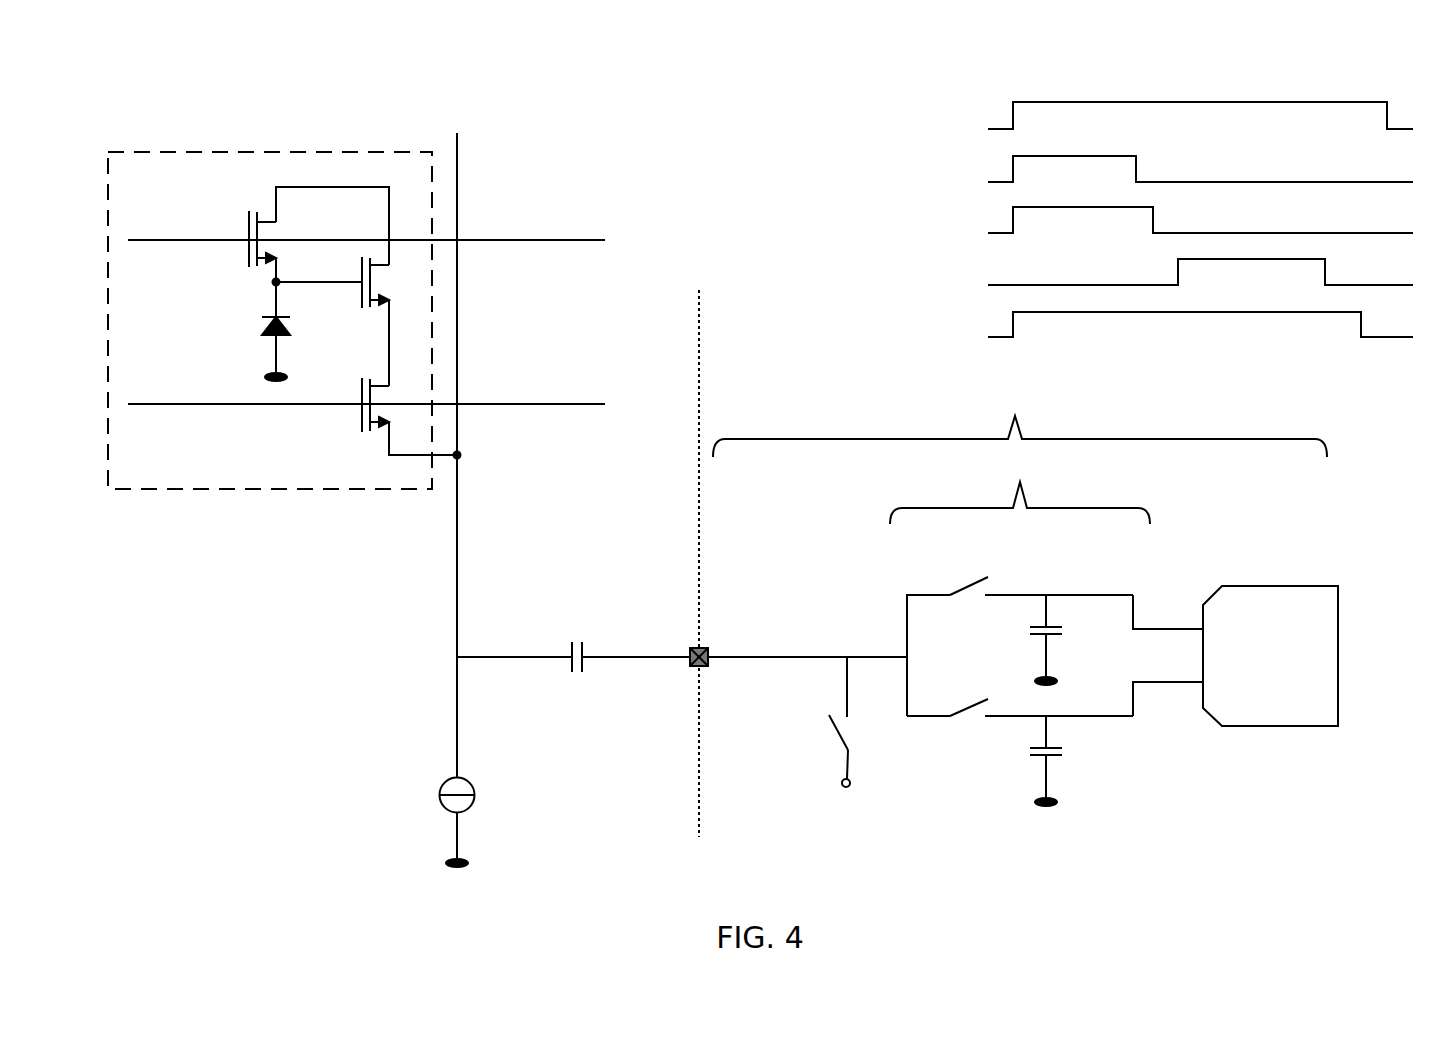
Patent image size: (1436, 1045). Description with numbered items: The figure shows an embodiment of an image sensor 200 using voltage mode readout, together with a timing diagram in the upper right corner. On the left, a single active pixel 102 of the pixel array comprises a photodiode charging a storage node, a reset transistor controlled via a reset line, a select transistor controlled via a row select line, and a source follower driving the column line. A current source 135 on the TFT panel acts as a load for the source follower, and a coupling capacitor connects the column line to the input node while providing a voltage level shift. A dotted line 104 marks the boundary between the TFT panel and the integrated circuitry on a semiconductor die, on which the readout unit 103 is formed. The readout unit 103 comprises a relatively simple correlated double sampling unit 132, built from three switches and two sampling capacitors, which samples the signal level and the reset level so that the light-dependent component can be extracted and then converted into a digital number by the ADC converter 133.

The image sensor 200 is at (700, 61).
The active pixel 102 is at (207, 500).
The readout unit 103 is at (1020, 417).
The dotted line 104 is at (697, 492).
The correlated double sampling unit 132 is at (1020, 485).
The ADC converter 133 is at (1272, 585).
The current source 135 is at (475, 795).